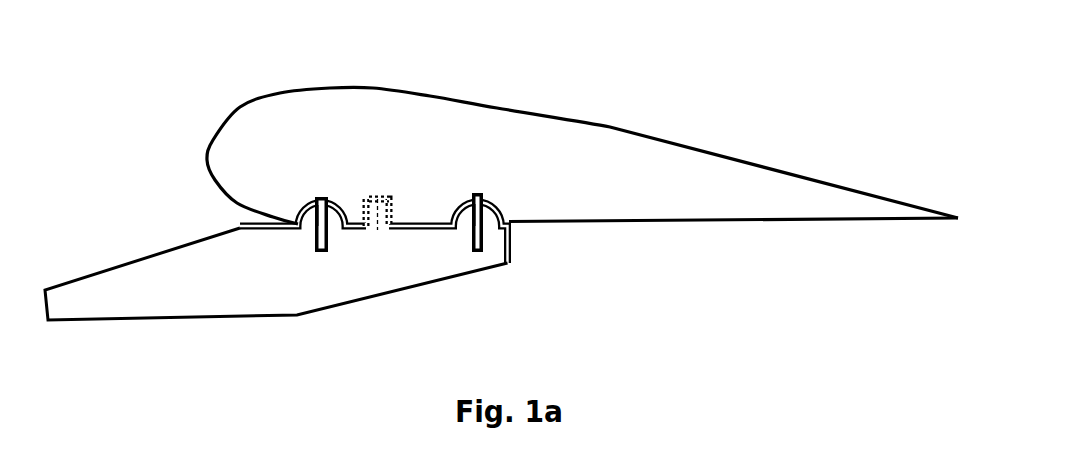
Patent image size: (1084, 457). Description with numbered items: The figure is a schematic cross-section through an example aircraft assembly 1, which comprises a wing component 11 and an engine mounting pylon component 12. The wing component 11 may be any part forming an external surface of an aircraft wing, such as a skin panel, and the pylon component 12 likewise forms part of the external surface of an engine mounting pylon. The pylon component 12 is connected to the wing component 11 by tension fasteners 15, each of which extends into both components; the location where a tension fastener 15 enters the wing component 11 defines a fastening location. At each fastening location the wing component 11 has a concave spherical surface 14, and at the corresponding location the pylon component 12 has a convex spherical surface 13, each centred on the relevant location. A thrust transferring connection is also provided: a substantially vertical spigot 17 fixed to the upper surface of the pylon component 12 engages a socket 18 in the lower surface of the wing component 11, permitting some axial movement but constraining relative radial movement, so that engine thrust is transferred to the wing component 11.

The aircraft assembly 1 is at (210, 62).
The wing component 11 is at (485, 140).
The engine mounting pylon component 12 is at (235, 280).
The convex spherical surface 13 is at (338, 219).
The concave spherical surface 14 is at (299, 211).
The tension fastener 15 is at (321, 237).
The spigot 17 is at (378, 199).
The socket 18 is at (375, 196).